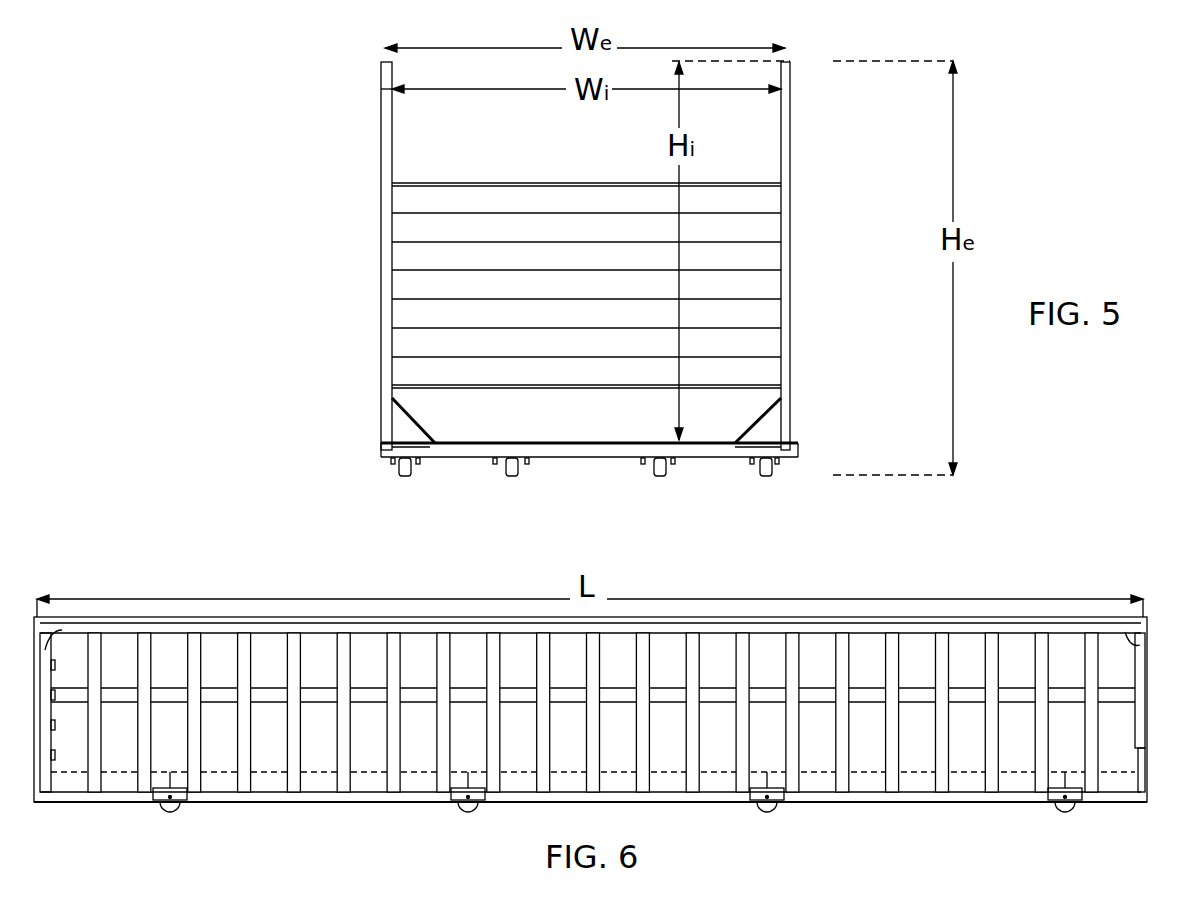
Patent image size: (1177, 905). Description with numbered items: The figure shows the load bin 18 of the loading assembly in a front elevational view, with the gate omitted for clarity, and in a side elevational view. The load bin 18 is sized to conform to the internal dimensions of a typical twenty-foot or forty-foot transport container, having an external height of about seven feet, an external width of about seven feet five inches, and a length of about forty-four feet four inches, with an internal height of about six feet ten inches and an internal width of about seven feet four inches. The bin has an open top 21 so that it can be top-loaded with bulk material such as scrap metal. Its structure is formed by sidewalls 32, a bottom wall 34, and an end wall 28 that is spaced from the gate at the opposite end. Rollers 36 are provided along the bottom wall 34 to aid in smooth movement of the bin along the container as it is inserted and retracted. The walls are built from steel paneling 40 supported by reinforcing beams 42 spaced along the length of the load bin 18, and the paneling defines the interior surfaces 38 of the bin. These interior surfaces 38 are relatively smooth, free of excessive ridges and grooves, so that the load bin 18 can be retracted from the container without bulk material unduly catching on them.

In FIG. 5, the load bin 18 is at (285, 77).
In FIG. 6, the load bin 18 is at (246, 570).
In FIG. 5, the open top 21 is at (421, 70).
In FIG. 5, the end wall 28 is at (551, 252).
In FIG. 6, the end wall 28 is at (47, 630).
In FIG. 5, the sidewalls 32 is at (378, 265).
In FIG. 6, the sidewalls 32 is at (308, 752).
In FIG. 5, the bottom wall 34 is at (565, 458).
In FIG. 6, the bottom wall 34 is at (860, 793).
In FIG. 5, the roller 36 is at (508, 467).
In FIG. 6, the roller 36 is at (175, 817).
In FIG. 5, the interior surfaces 38 is at (556, 444).
In FIG. 6, the steel paneling 40 is at (912, 668).
In FIG. 6, the reinforcing beams 42 is at (1042, 670).